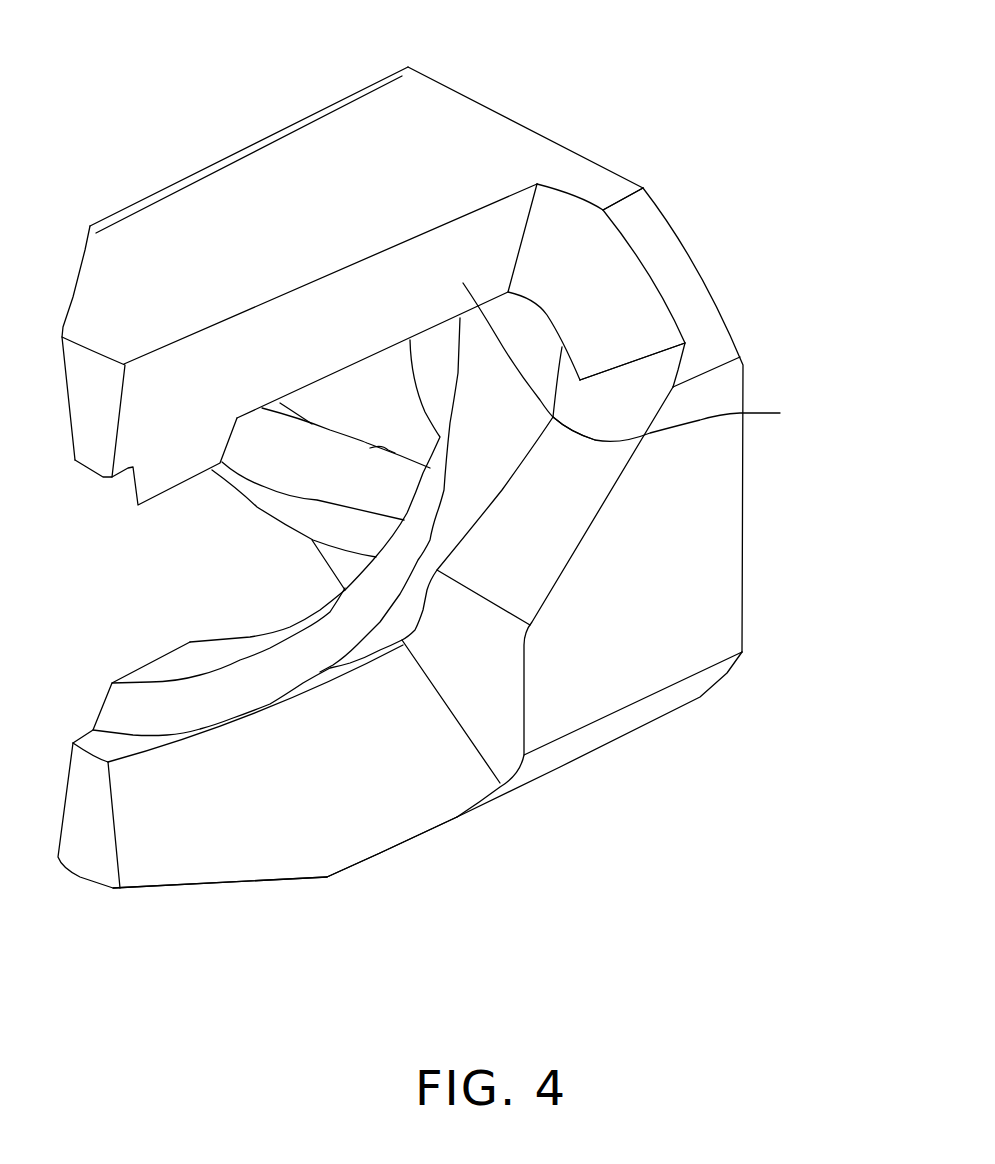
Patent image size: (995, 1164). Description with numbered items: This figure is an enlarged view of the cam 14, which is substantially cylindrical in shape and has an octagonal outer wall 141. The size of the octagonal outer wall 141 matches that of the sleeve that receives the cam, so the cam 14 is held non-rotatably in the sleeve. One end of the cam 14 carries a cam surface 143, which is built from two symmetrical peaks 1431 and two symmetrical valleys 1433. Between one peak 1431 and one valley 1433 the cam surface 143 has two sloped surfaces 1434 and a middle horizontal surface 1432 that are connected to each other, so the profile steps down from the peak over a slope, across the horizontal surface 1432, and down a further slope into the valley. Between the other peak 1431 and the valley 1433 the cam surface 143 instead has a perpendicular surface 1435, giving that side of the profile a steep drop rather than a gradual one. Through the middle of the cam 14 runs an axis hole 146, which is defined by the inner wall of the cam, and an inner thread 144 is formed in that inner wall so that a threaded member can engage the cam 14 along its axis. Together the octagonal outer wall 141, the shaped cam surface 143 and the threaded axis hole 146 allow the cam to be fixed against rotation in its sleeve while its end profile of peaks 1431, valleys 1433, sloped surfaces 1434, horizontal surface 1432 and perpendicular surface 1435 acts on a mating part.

The cam 14 is at (222, 140).
The octagonal outer wall 141 is at (475, 130).
The cam surface 143 is at (866, 304).
The inner thread 144 is at (257, 492).
The axis hole 146 is at (432, 360).
The peak 1431 is at (93, 833).
The middle horizontal surface 1432 is at (500, 715).
The valley 1433 is at (627, 322).
The sloped surface 1434 is at (350, 732).
The perpendicular surface 1435 is at (740, 413).